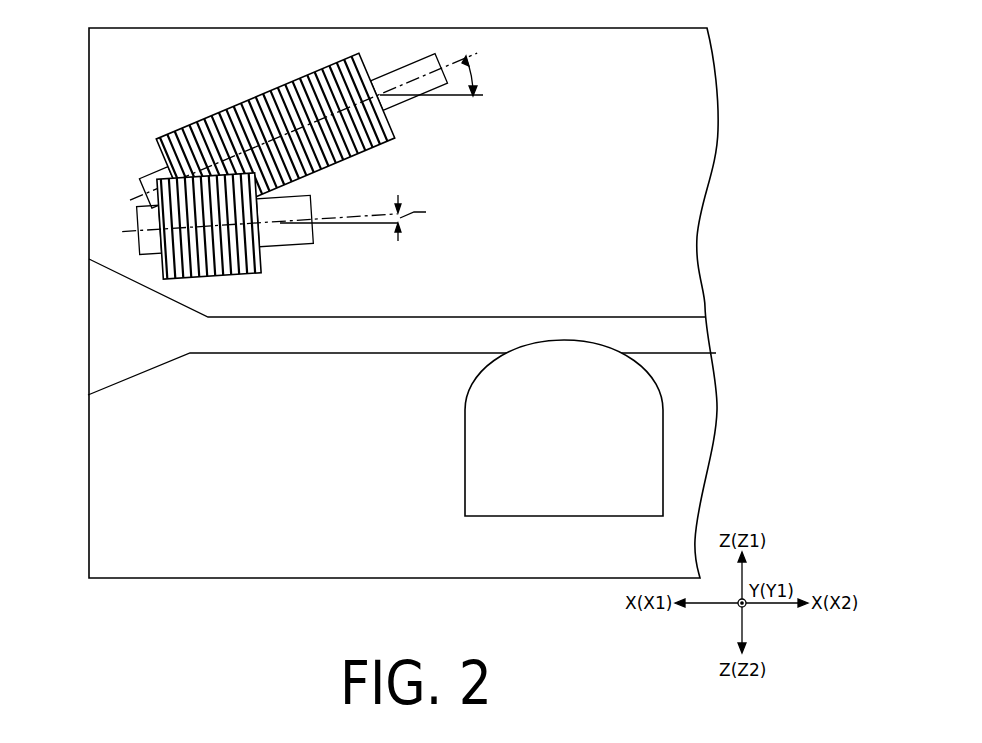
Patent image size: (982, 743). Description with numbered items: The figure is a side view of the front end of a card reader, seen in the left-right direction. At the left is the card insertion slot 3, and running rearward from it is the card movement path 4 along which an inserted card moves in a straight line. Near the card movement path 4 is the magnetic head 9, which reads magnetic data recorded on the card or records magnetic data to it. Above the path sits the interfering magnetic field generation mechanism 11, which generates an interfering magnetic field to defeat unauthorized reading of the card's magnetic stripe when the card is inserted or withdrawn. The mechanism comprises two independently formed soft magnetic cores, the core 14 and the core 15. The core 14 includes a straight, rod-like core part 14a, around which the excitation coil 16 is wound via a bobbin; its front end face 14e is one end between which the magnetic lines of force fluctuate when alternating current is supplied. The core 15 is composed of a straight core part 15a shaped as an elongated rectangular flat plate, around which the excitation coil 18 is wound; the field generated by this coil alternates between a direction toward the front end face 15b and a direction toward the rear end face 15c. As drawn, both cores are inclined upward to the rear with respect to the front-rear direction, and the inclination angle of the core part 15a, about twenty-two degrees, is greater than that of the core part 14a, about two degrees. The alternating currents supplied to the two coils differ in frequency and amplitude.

The card insertion slot 3 is at (89, 326).
The card movement path 4 is at (681, 345).
The magnetic head 9 is at (465, 466).
The interfering magnetic field generation mechanism 11 is at (156, 78).
The core 14 is at (194, 256).
The core part 14a is at (270, 250).
The front end face 14e is at (138, 243).
The core 15 is at (311, 159).
The core part 15a is at (397, 106).
The front end face 15b is at (140, 183).
The rear end face 15c is at (441, 60).
The coil 16 is at (172, 282).
The coil 18 is at (229, 108).